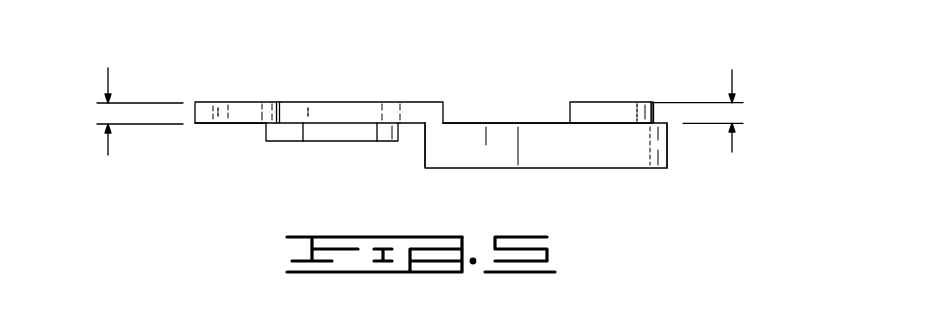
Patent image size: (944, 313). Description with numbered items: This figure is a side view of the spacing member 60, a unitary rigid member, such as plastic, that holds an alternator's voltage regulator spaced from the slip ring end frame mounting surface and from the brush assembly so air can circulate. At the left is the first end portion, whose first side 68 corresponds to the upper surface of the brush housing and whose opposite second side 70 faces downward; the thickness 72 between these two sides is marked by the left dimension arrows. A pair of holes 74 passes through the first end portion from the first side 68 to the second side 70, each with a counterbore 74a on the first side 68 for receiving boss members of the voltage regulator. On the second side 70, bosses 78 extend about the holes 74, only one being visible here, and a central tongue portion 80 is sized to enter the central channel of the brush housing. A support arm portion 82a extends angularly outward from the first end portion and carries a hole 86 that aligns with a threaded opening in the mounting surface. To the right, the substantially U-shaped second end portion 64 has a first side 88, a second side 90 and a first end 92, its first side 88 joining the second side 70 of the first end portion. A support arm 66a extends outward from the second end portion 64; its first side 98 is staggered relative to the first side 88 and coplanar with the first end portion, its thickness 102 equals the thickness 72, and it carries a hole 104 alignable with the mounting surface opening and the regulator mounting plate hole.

The spacing member 60 is at (767, 55).
The second end portion 64 is at (668, 143).
The support arm 66a is at (653, 110).
The first side 68 is at (425, 101).
The second side 70 is at (410, 124).
The thickness 72 is at (108, 153).
The holes 74 is at (335, 133).
The counterbore 74a is at (300, 112).
The bosses 78 is at (310, 142).
The central tongue portion 80 is at (272, 142).
The support arm portion 82a is at (207, 124).
The hole 86 is at (218, 113).
The first side 88 is at (528, 122).
The second side 90 is at (548, 169).
The first end 92 is at (425, 157).
The first side 98 is at (575, 101).
The thickness 102 is at (733, 150).
The hole 104 is at (593, 112).